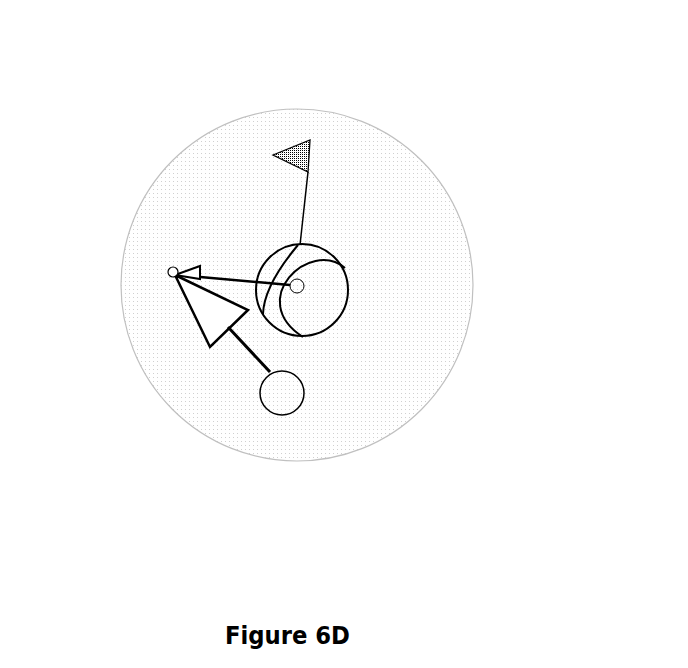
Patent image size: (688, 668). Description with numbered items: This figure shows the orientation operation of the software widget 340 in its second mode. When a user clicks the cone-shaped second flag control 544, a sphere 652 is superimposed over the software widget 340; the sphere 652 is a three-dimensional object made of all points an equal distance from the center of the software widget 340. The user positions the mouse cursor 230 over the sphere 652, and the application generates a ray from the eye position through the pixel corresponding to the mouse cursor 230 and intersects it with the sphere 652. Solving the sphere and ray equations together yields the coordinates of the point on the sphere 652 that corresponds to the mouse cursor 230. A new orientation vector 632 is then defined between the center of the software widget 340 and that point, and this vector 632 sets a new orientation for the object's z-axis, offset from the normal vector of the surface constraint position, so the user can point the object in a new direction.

The software widget 340 is at (540, 57).
The sphere 652 is at (445, 190).
The second flag control 544 is at (190, 270).
The mouse cursor 230 is at (190, 312).
The orientation vector 632 is at (243, 286).